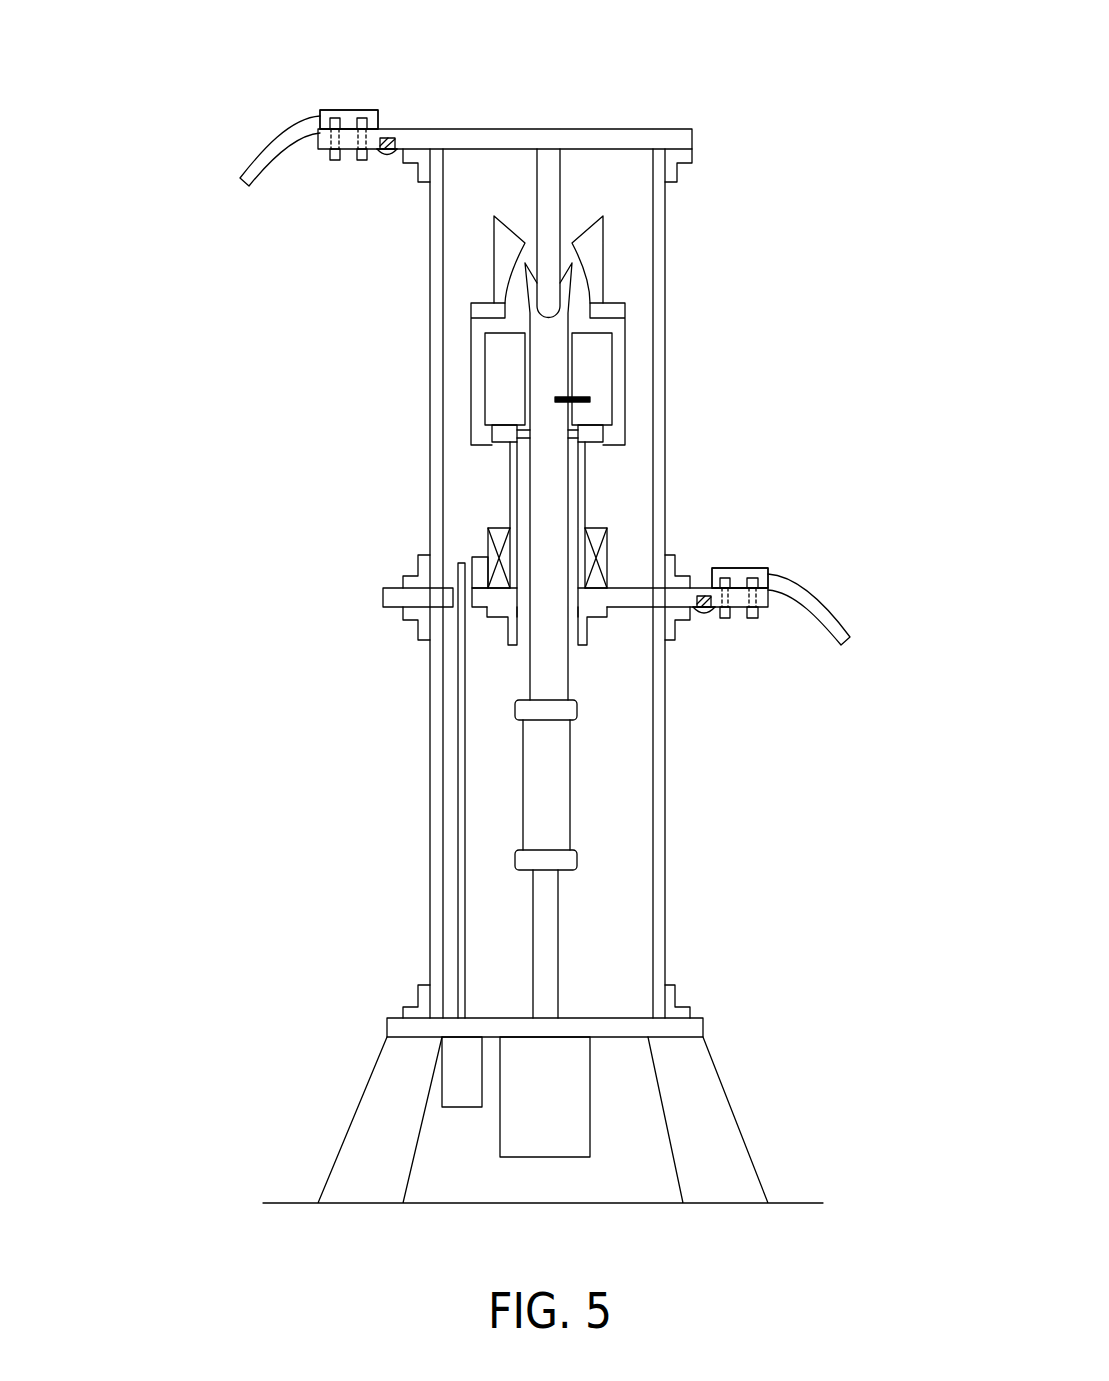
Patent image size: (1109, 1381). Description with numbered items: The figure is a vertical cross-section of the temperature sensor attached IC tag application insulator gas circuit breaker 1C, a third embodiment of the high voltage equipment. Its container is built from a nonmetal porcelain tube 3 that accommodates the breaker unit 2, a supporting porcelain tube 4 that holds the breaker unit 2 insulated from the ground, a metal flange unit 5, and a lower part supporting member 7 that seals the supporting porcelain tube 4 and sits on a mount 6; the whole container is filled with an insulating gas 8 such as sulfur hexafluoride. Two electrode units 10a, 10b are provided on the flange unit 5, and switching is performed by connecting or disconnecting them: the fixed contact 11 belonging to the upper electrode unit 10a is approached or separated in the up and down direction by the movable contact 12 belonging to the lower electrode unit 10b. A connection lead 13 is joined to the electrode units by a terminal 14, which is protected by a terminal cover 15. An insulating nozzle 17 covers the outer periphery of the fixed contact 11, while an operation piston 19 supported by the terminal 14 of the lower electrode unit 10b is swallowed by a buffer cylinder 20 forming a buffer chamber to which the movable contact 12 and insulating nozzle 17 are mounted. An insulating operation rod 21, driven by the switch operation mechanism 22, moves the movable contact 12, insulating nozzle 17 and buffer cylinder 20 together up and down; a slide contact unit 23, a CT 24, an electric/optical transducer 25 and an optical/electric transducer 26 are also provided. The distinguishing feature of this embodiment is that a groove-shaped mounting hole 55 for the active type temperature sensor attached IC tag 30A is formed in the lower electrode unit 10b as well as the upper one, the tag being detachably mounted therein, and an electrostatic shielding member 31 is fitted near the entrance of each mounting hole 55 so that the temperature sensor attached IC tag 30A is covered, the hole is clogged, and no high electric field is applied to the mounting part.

The temperature sensor attached IC tag application insulator gas circuit breaker 1C is at (655, 78).
The breaker unit 2 is at (610, 219).
The nonmetal porcelain tube 3 is at (667, 236).
The supporting porcelain tube 4 is at (430, 706).
The flange unit 5 is at (488, 130).
The mount 6 is at (745, 1144).
The lower part supporting member 7 is at (400, 1016).
The insulating gas 8 is at (476, 468).
The upper electrode unit 10a is at (350, 168).
The lower electrode unit 10b is at (755, 630).
The fixed contact 11 is at (558, 170).
The movable contact 12 is at (575, 284).
The connection lead 13 is at (270, 137).
The terminal 14 is at (320, 149).
The terminal cover 15 is at (333, 110).
The insulating nozzle 17 is at (492, 262).
The operation piston 19 is at (586, 468).
The buffer cylinder 20 is at (628, 337).
The insulating operation rod 21 is at (575, 780).
The switch operation mechanism 22 is at (590, 1083).
The slide contact unit 23 is at (508, 626).
The CT (Current Transformer) 24 is at (505, 528).
The electric/optical (E/O) transducer 25 is at (486, 555).
The optical/electric (O/E) transducer 26 is at (440, 1090).
The active type temperature sensor attached IC tag 30A is at (385, 138).
The electrostatic shielding member 31 is at (390, 157).
The mounting hole 55 is at (398, 143).